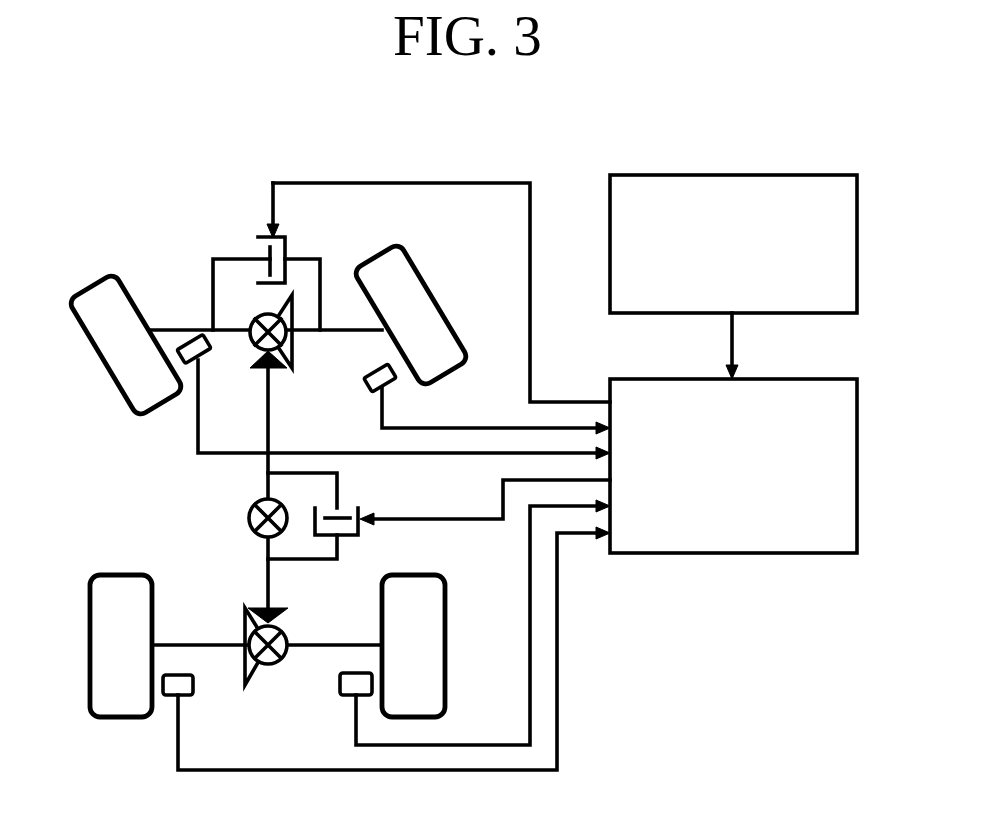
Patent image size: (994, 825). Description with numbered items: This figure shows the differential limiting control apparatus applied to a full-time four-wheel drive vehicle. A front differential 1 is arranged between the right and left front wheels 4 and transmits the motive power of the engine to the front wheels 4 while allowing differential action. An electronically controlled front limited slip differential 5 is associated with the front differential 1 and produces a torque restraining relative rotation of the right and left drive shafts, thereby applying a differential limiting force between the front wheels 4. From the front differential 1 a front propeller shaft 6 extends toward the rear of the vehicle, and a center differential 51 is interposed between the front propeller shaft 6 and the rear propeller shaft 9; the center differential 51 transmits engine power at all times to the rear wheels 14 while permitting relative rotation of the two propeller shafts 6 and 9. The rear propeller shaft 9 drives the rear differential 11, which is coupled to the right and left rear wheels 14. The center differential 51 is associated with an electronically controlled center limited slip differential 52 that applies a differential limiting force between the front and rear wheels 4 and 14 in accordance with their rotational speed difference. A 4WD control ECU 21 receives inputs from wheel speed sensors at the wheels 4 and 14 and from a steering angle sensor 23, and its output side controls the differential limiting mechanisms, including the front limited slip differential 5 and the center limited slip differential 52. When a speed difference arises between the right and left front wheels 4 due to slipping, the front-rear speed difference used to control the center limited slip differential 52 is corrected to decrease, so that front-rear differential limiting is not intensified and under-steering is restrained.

The front differential 1 is at (253, 315).
The front wheels 4 is at (100, 338).
The front limited slip differential 5 is at (286, 246).
The front propeller shaft 6 is at (272, 405).
The rear propeller shaft 9 is at (265, 583).
The rear differential 11 is at (272, 660).
The rear wheels 14 is at (100, 612).
The 4WD control ECU 21 is at (857, 394).
The steering angle sensor 23 is at (857, 188).
The center differential 51 is at (248, 518).
The center limited slip differential 52 is at (352, 538).